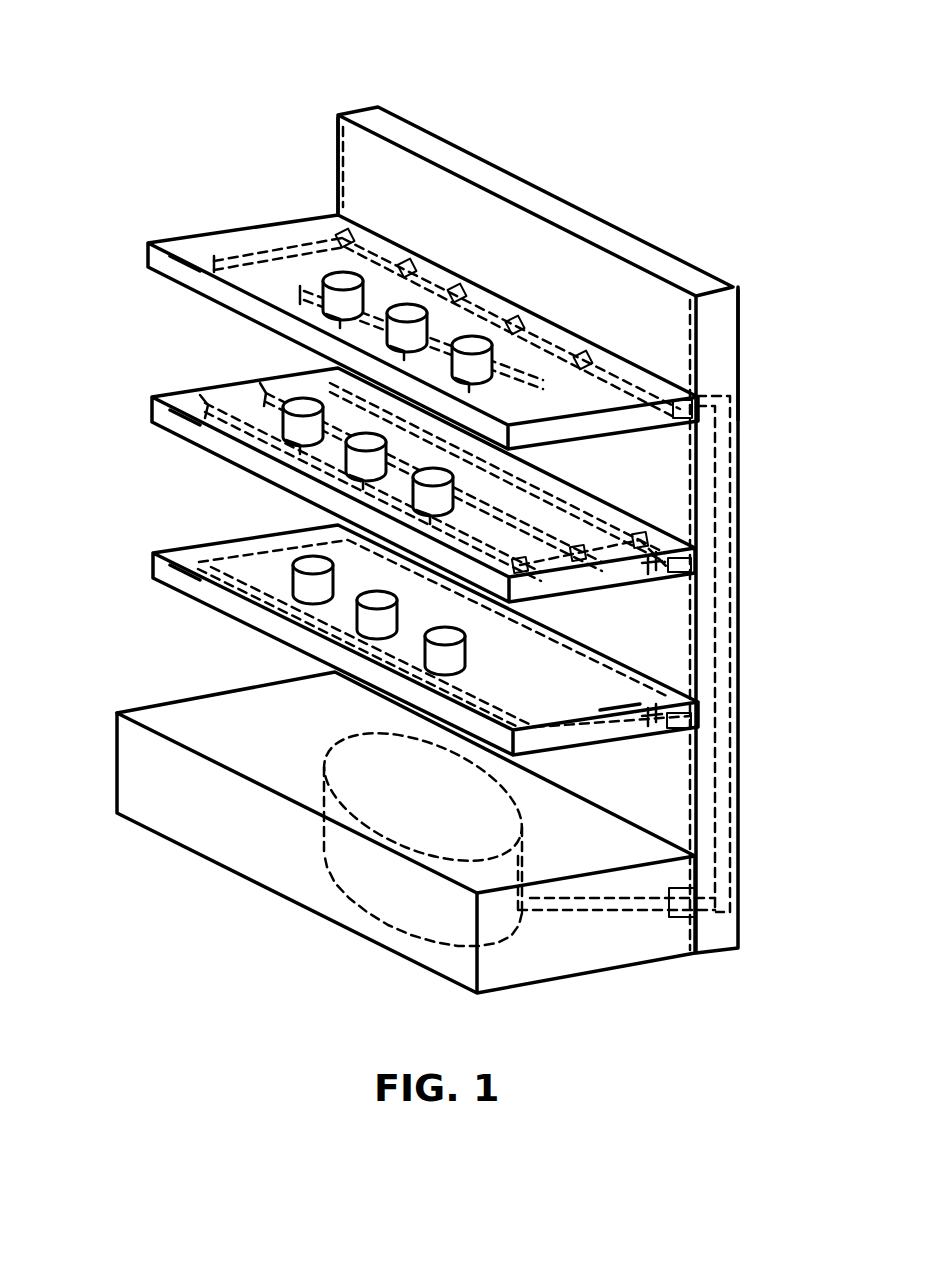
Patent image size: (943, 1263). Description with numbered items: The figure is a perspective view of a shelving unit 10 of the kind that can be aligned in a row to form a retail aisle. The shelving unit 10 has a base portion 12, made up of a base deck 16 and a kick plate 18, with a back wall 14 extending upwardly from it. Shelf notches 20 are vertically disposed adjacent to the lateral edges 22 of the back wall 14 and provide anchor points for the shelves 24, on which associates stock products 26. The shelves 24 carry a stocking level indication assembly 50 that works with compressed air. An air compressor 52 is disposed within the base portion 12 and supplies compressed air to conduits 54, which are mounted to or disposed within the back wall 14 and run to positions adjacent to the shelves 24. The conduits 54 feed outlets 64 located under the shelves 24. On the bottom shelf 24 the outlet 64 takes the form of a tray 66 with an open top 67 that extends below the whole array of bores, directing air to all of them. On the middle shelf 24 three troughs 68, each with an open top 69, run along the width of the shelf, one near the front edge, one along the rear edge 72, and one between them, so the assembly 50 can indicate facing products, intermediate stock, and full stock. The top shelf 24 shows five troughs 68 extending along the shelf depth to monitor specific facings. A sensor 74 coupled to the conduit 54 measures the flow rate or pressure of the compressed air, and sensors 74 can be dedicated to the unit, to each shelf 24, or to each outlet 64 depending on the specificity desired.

The shelving unit 10 is at (584, 110).
The base portion 12 is at (378, 824).
The back wall 14 is at (603, 233).
The base deck 16 is at (178, 704).
The kick plate 18 is at (200, 820).
The shelf notches 20 is at (340, 176).
The lateral edges 22 is at (338, 130).
The shelves 24 is at (429, 502).
The products 26 is at (330, 275).
The stocking level indication assembly 50 is at (663, 790).
The air compressor 52 is at (398, 898).
The conduits 54 is at (733, 603).
The outlets 64 is at (618, 713).
The tray 66 is at (658, 693).
The open top 67 is at (606, 675).
The trough 68 is at (214, 258).
The open top 69 is at (548, 372).
The rear edge 72 is at (410, 262).
The sensor 74 is at (344, 232).